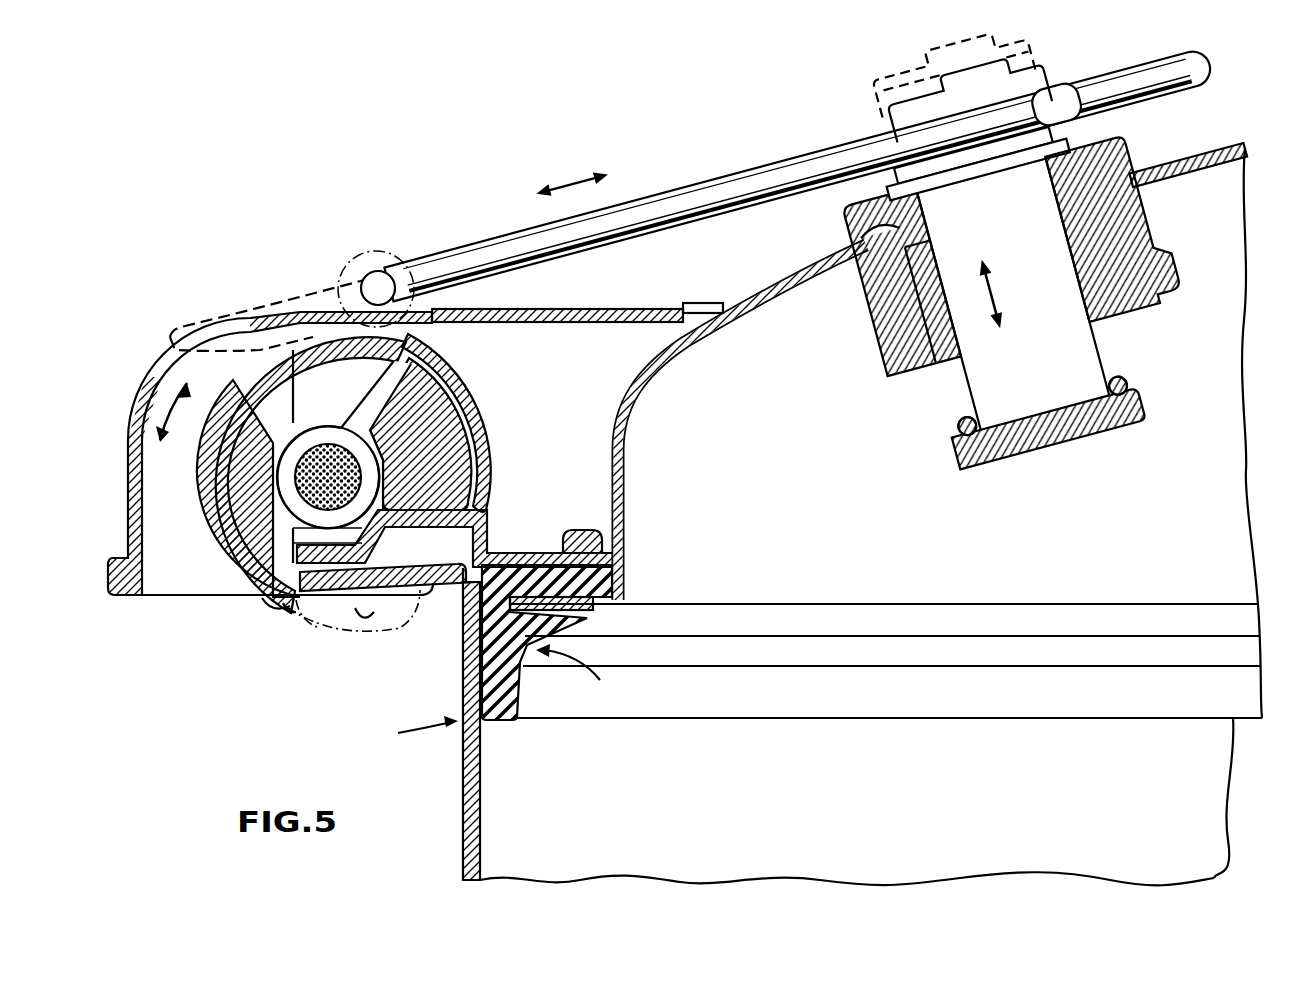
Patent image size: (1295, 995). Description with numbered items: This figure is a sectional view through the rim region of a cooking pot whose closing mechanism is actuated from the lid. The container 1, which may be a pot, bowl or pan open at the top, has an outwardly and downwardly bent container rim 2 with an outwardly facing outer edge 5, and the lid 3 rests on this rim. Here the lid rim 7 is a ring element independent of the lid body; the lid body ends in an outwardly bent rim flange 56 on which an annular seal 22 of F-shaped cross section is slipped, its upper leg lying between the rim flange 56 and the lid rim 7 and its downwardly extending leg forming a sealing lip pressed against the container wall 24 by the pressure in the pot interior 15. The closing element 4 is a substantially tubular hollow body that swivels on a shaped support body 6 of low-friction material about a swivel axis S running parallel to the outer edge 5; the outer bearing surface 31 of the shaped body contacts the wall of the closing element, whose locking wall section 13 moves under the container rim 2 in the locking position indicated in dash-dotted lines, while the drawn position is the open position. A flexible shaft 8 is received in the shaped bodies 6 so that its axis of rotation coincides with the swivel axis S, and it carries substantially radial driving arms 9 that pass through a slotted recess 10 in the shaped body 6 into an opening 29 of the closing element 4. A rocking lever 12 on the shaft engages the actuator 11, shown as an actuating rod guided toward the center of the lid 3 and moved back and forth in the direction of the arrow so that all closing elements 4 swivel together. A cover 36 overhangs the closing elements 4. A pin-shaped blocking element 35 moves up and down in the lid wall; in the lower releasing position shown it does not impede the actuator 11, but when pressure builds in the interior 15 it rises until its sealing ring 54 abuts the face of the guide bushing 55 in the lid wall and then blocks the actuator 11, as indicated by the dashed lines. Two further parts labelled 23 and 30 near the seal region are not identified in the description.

The container 1 is at (418, 728).
The container rim 2 is at (405, 590).
The lid 3 is at (772, 290).
The closing element 4 is at (247, 352).
The outer edge 5 is at (307, 628).
The shaped support body 6 is at (210, 460).
The lid rim 7 is at (480, 528).
The flexible shaft 8 is at (312, 458).
The swivel axis S is at (326, 452).
The driving arms 9 is at (407, 350).
The slotted recess 10 is at (282, 368).
The actuators 11 is at (678, 205).
The rocking lever 12 is at (371, 258).
The locking wall section 13 is at (262, 608).
The interior 15 is at (667, 773).
The annular seal 22 is at (554, 642).
The seal edge 23 is at (288, 615).
The container wall 24 is at (488, 772).
The openings 29 is at (443, 375).
The insert plate 30 is at (522, 695).
The outer bearing surface 31 is at (210, 560).
The blocking element 35 is at (1098, 362).
The cover 36 is at (555, 321).
The sealing ring 54 is at (962, 432).
The guide bushing 55 is at (1130, 278).
The rim flange 56 is at (627, 580).